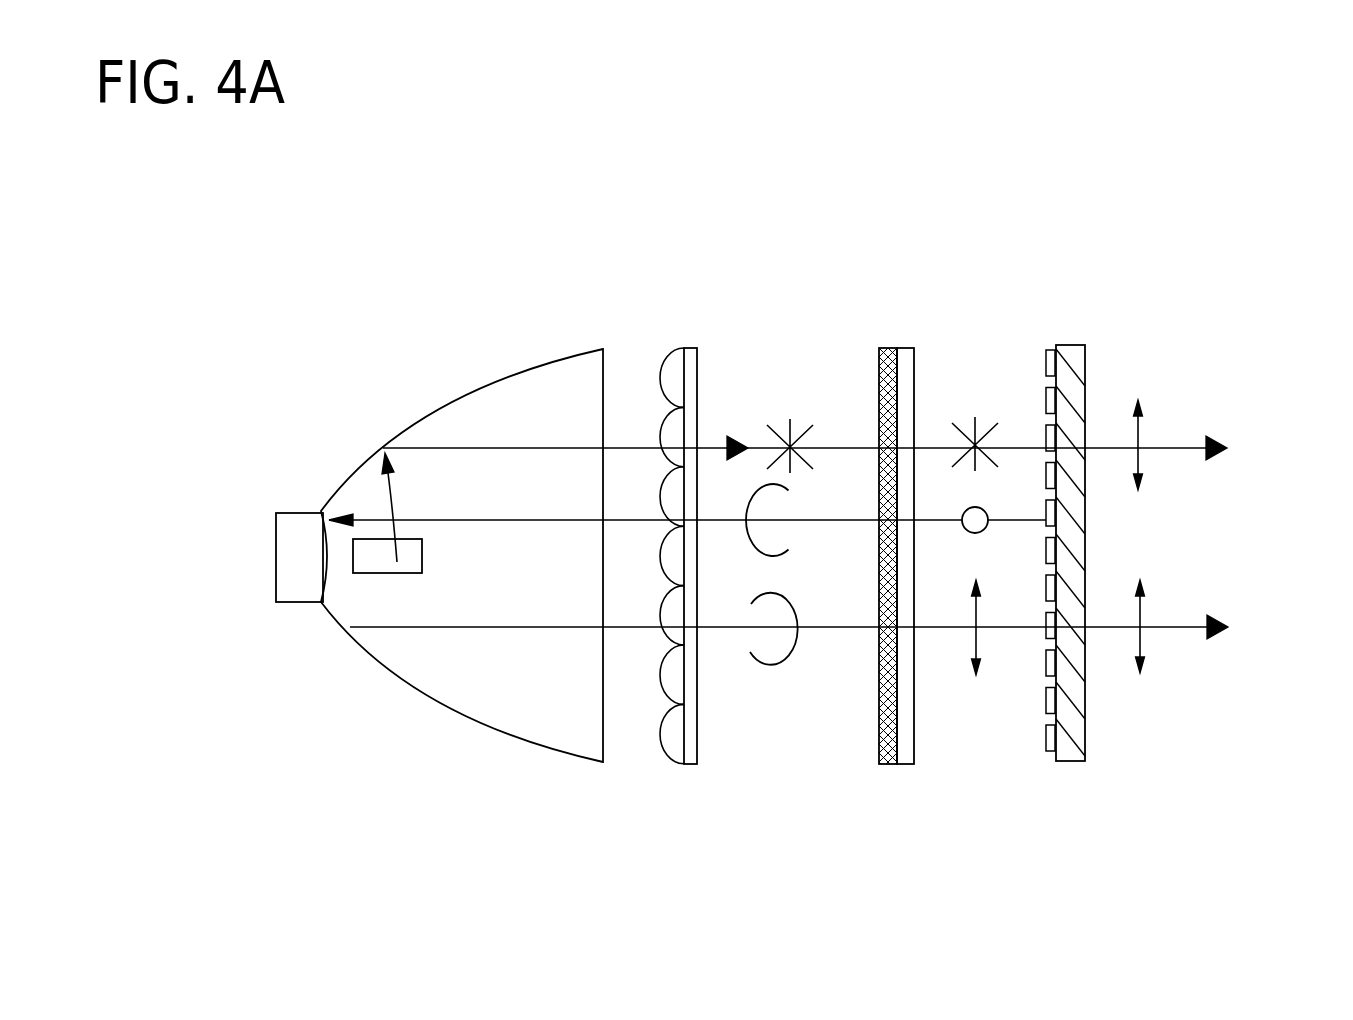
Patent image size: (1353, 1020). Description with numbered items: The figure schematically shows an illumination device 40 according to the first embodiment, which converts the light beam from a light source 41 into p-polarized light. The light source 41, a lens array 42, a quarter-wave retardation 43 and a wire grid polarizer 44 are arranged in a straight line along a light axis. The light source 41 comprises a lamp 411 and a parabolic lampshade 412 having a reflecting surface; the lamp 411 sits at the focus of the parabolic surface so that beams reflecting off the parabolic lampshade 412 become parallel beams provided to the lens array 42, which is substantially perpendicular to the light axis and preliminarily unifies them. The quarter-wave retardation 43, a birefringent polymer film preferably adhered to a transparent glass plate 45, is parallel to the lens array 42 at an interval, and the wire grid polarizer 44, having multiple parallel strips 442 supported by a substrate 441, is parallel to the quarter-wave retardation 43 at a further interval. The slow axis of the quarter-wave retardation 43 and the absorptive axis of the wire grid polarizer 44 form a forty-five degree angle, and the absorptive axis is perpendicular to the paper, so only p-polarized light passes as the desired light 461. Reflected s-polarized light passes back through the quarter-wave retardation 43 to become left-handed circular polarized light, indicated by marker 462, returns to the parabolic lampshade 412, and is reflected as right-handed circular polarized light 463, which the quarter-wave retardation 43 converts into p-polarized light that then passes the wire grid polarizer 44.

The illumination device 40 is at (1200, 278).
The light source 41 is at (522, 328).
The lamp 411 is at (397, 562).
The parabolic lampshade 412 is at (435, 412).
The lens array 42 is at (685, 348).
The quarter-wave retardation 43 is at (891, 348).
The wire grid polarizer 44 is at (1070, 345).
The substrate 441 is at (1085, 358).
The parallel strips 442 is at (1046, 362).
The transparent glass plate 45 is at (911, 348).
The p-polarized light 461 is at (1171, 442).
The circularly polarized light component 462 is at (1026, 520).
The right-handed circular polarized light 463 is at (850, 627).